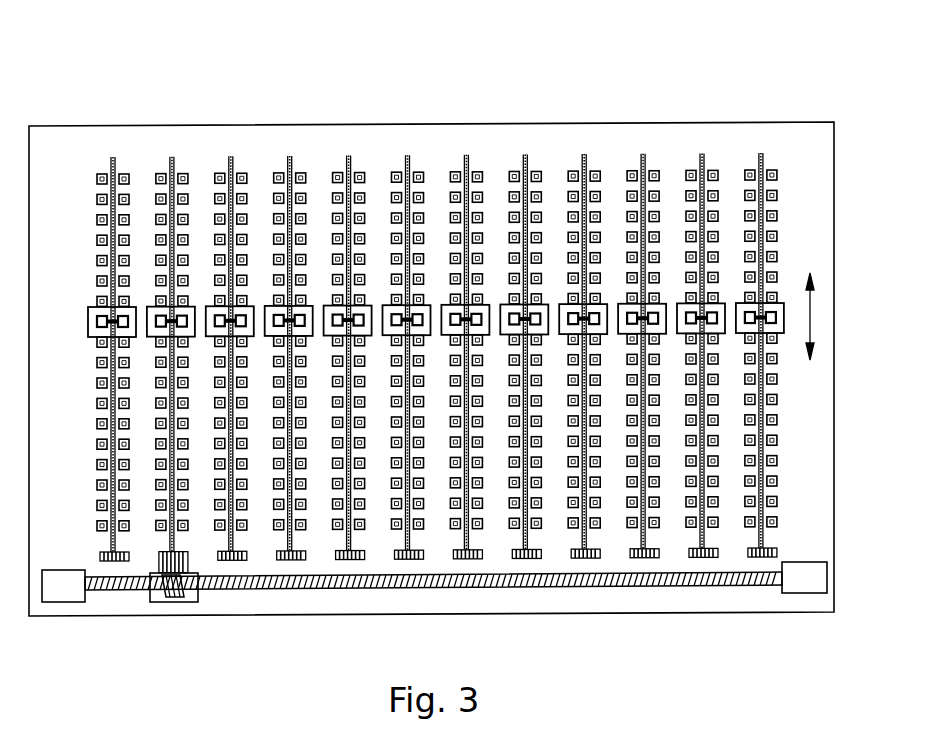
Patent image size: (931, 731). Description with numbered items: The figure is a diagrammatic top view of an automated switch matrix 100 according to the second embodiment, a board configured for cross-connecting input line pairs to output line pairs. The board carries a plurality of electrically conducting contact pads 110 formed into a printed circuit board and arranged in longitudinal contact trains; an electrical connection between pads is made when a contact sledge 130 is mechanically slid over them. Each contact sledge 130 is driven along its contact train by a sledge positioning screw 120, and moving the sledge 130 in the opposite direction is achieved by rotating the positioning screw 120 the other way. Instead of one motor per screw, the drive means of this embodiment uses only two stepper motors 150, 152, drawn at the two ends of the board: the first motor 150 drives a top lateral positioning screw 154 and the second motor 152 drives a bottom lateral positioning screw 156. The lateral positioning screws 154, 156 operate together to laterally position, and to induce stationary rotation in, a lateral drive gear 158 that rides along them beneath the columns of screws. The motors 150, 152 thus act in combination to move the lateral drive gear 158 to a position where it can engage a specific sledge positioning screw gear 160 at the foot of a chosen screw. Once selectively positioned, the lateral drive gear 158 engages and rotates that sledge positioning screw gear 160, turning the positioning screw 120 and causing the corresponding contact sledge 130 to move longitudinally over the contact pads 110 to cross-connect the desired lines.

The switch matrix 100 is at (100, 74).
The contact pads 110 is at (299, 171).
The sledge positioning screw 120 is at (409, 158).
The contact sledge 130 is at (88, 322).
The stepper motor 150 is at (67, 602).
The stepper motor 152 is at (803, 593).
The top lateral positioning screw 154 is at (433, 619).
The bottom lateral positioning screw 156 is at (585, 590).
The lateral drive gear 158 is at (173, 602).
The sledge positioning screw gear 160 is at (247, 556).